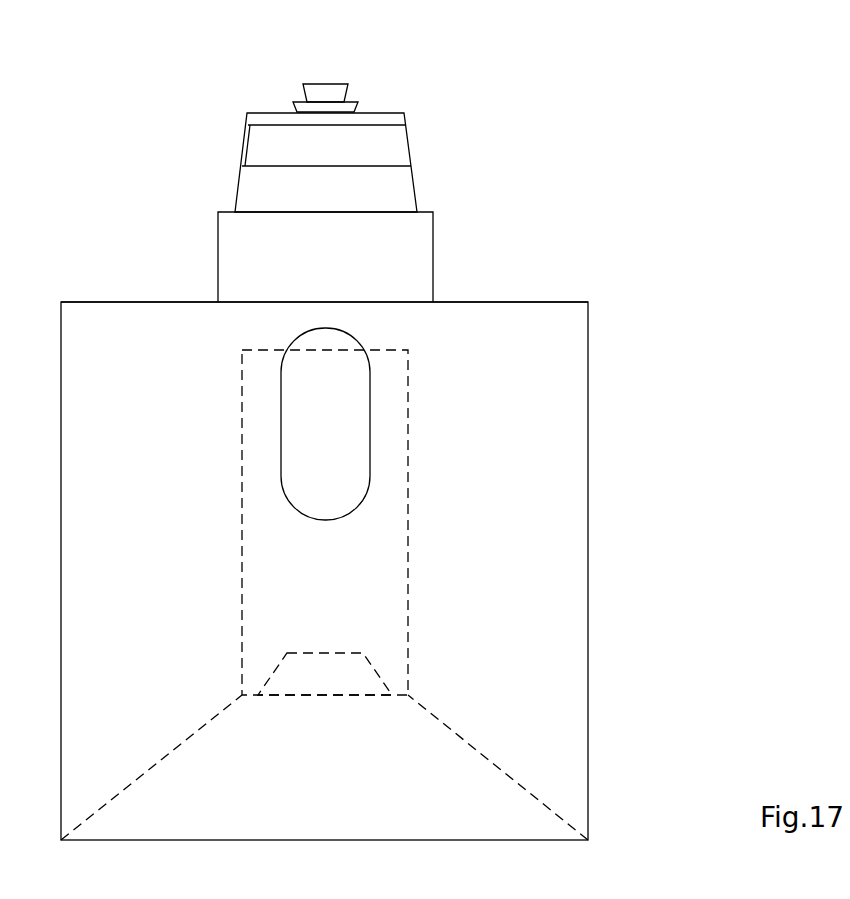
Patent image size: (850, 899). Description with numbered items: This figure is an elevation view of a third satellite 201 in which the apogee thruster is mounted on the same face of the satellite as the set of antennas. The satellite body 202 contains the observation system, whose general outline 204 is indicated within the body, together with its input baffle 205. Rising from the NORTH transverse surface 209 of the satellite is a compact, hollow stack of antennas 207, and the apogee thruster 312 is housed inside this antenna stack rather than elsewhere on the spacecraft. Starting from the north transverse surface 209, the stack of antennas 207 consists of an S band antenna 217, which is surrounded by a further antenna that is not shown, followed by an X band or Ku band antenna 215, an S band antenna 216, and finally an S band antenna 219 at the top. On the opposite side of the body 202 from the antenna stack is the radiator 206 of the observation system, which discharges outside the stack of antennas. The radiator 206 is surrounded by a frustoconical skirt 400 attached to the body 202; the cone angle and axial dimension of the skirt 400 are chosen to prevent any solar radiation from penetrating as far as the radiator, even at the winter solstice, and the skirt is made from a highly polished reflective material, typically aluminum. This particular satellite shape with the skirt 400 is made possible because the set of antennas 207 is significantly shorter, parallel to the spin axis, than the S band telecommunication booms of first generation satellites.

The third satellite 201 is at (680, 323).
The satellite body 202 is at (592, 535).
The general outline of the observation system 204 is at (411, 488).
The input baffle 205 is at (375, 425).
The radiator 206 is at (381, 672).
The stack of antennas 207 is at (235, 172).
The NORTH transverse surface 209 is at (573, 296).
The X band or Ku band antenna 215 is at (419, 183).
The S band antenna 216 is at (416, 146).
The S band antenna 217 is at (437, 248).
The S band antenna 219 is at (411, 113).
The apogee thruster 312 is at (353, 87).
The frustoconical skirt 400 is at (486, 757).